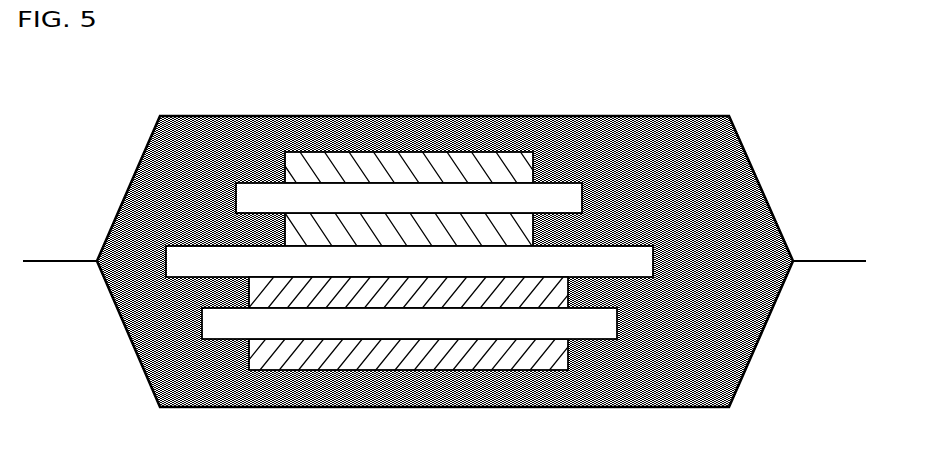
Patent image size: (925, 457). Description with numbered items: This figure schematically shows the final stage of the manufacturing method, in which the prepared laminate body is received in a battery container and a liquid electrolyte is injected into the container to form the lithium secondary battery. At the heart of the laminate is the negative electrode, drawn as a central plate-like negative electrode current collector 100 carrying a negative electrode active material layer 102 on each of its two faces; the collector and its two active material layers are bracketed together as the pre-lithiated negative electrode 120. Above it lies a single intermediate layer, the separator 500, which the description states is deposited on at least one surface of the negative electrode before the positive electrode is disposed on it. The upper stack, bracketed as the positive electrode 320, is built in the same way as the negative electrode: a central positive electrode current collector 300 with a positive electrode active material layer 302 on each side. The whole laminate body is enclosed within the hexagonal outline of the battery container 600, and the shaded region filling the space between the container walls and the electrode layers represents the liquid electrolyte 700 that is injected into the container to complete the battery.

The negative electrode current collector 100 is at (617, 322).
The negative electrode active material layer 102 is at (568, 291).
The first electrode assembly 120 is at (474, 323).
The second electrode 300 is at (582, 197).
The second active material layer 302 is at (533, 166).
The second electrode assembly 320 is at (474, 199).
The separator 500 is at (653, 259).
The casing 600 is at (442, 115).
The electrolyte 700 is at (196, 135).